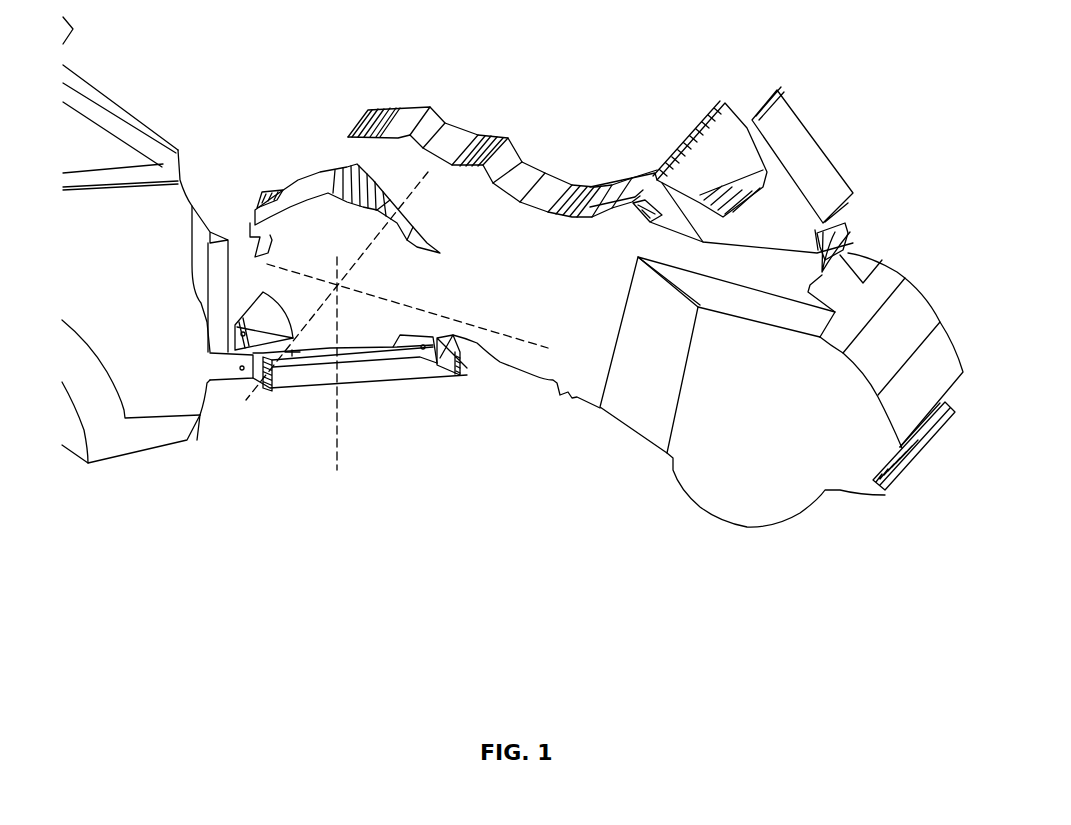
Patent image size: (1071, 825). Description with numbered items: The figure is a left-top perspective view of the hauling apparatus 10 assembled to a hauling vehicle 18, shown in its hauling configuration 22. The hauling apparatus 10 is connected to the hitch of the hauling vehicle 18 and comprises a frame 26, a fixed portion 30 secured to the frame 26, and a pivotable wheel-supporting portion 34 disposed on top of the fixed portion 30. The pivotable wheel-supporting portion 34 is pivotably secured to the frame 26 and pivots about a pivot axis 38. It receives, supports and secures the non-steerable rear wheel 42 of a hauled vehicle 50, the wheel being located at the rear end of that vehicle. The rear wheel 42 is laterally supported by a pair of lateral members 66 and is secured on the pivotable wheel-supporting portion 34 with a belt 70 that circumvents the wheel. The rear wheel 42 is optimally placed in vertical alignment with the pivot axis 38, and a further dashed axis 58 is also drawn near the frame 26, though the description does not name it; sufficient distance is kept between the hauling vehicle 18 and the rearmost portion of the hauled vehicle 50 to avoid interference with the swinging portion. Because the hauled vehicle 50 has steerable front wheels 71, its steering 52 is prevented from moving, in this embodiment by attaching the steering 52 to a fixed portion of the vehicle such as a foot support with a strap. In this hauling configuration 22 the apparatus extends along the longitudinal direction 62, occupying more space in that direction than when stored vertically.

The hauling apparatus 10 is at (392, 482).
The hauling vehicle 18 is at (120, 92).
The hauling configuration 22 is at (619, 104).
The frame 26 is at (220, 383).
The fixed portion 30 is at (373, 385).
The pivotable wheel-supporting portion 34 is at (418, 353).
The pivot axis 38 is at (337, 372).
The non-steerable wheel 42 is at (297, 188).
The hauled vehicle 50 is at (698, 225).
The steering 52 is at (718, 148).
The mounting plate 58 is at (331, 299).
The longitudinal direction 62 is at (421, 313).
The lateral members 66 is at (293, 352).
The belt 70 is at (440, 352).
The steerable front wheels 71 is at (747, 450).